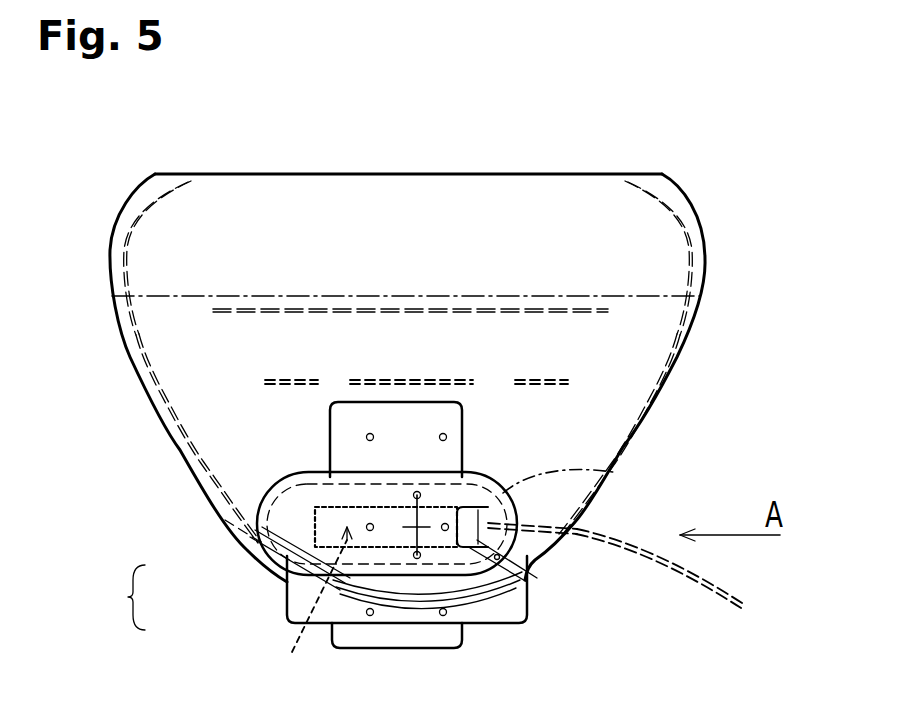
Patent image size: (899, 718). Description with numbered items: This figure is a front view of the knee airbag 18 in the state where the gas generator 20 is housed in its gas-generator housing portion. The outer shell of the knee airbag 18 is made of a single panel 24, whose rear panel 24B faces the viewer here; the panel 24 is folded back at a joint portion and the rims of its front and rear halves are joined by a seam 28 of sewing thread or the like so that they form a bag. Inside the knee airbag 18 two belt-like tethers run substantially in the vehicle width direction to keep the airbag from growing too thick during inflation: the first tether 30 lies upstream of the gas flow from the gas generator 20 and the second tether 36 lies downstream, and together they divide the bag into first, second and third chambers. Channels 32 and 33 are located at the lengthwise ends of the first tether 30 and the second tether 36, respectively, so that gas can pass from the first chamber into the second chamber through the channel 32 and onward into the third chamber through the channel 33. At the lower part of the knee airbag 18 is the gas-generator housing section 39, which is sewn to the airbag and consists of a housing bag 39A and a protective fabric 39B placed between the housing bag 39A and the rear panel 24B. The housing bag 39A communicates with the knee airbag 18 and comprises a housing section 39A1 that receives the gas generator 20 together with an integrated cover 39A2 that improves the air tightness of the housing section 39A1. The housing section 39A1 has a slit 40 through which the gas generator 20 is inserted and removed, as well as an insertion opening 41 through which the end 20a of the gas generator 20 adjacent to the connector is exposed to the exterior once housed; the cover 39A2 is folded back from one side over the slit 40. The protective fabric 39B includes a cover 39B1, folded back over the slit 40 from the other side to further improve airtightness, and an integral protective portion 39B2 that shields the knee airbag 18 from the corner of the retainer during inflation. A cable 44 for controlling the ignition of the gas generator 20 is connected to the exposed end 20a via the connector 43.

The knee airbag 18 is at (548, 160).
The panel 24 is at (453, 173).
The rear panel 24B is at (600, 248).
The second tether 36 is at (502, 292).
The first tether 30 is at (558, 378).
The channel 33 is at (185, 313).
The channel 32 is at (238, 382).
The gas-generator housing section 39 is at (118, 597).
The housing bag 39A is at (300, 528).
The protective fabric 39B is at (287, 610).
The housing section 39A1 is at (477, 498).
The cover 39A2 is at (440, 648).
The cover 39B1 is at (367, 463).
The protective portion 39B2 is at (527, 617).
The seam 28 is at (240, 525).
The gas generator 20 is at (316, 607).
The end of the gas generator 20a is at (499, 557).
The slit 40 is at (527, 557).
The insertion opening 41 is at (520, 525).
The connector 43 is at (600, 472).
The cable 44 is at (693, 590).